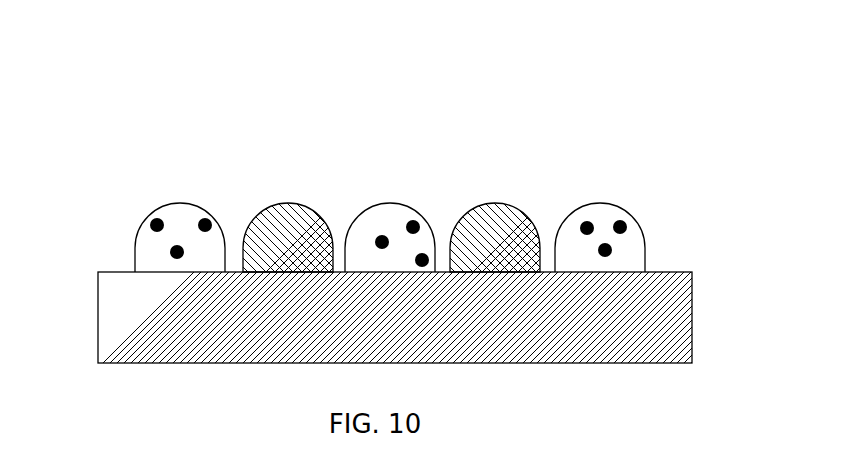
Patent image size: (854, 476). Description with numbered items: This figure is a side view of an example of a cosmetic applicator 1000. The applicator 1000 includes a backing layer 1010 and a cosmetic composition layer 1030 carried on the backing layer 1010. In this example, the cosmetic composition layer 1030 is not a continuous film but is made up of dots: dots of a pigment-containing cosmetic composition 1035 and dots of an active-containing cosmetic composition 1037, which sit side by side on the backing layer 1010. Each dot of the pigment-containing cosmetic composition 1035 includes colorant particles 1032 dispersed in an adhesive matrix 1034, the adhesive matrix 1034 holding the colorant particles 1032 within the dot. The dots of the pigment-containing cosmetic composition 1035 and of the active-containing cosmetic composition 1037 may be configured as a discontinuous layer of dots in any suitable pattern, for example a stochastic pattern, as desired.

The applicator 1000 is at (131, 87).
The backing layer 1010 is at (80, 273).
The cosmetic composition layer 1030 is at (80, 203).
The colorant particles 1032 is at (624, 222).
The adhesive matrix 1034 is at (625, 258).
The pigment-containing cosmetic composition 1035 is at (450, 199).
The active-containing cosmetic composition 1037 is at (290, 203).